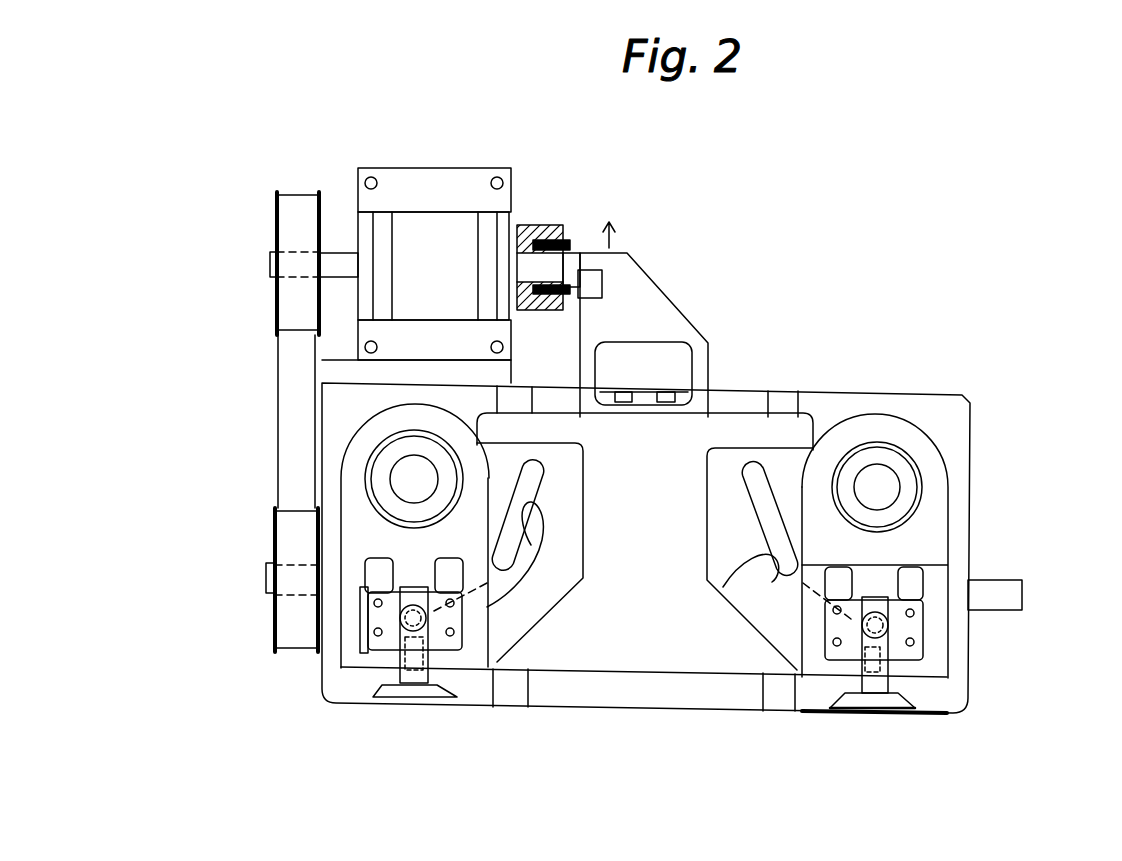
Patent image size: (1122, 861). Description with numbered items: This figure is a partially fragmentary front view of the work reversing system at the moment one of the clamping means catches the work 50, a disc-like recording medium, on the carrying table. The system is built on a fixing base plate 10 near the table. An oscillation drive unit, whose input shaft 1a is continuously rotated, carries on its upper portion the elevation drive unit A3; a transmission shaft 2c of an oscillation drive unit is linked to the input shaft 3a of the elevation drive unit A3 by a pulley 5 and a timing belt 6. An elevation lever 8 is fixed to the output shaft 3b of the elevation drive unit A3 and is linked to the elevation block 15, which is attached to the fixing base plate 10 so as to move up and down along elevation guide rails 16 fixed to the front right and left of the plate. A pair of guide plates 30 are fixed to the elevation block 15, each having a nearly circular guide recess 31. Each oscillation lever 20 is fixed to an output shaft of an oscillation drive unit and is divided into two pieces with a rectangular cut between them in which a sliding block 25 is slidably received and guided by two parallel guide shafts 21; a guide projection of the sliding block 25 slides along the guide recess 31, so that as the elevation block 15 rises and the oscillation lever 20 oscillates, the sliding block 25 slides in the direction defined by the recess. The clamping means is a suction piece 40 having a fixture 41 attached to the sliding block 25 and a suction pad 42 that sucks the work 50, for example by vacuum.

The fixing base plate 10 is at (950, 410).
The input shaft 1a is at (1020, 595).
The elevation drive unit A3 is at (434, 240).
The input shaft 3a is at (342, 257).
The output shaft 3b is at (527, 225).
The elevation lever 8 is at (594, 250).
The elevation block 15 is at (710, 417).
The elevation guide rail 16 is at (517, 403).
The oscillation lever 20 is at (358, 510).
The guide shaft 21 is at (817, 593).
The sliding block 25 is at (363, 643).
The guide plate 30 is at (535, 603).
The guide recess 31 is at (743, 560).
The suction piece 40 is at (390, 675).
The fixture 41 is at (923, 648).
The suction pad 42 is at (913, 700).
The work 50 is at (927, 714).
The pulley 5 is at (275, 224).
The timing belt 6 is at (278, 380).
The transmission shaft 2c is at (266, 582).